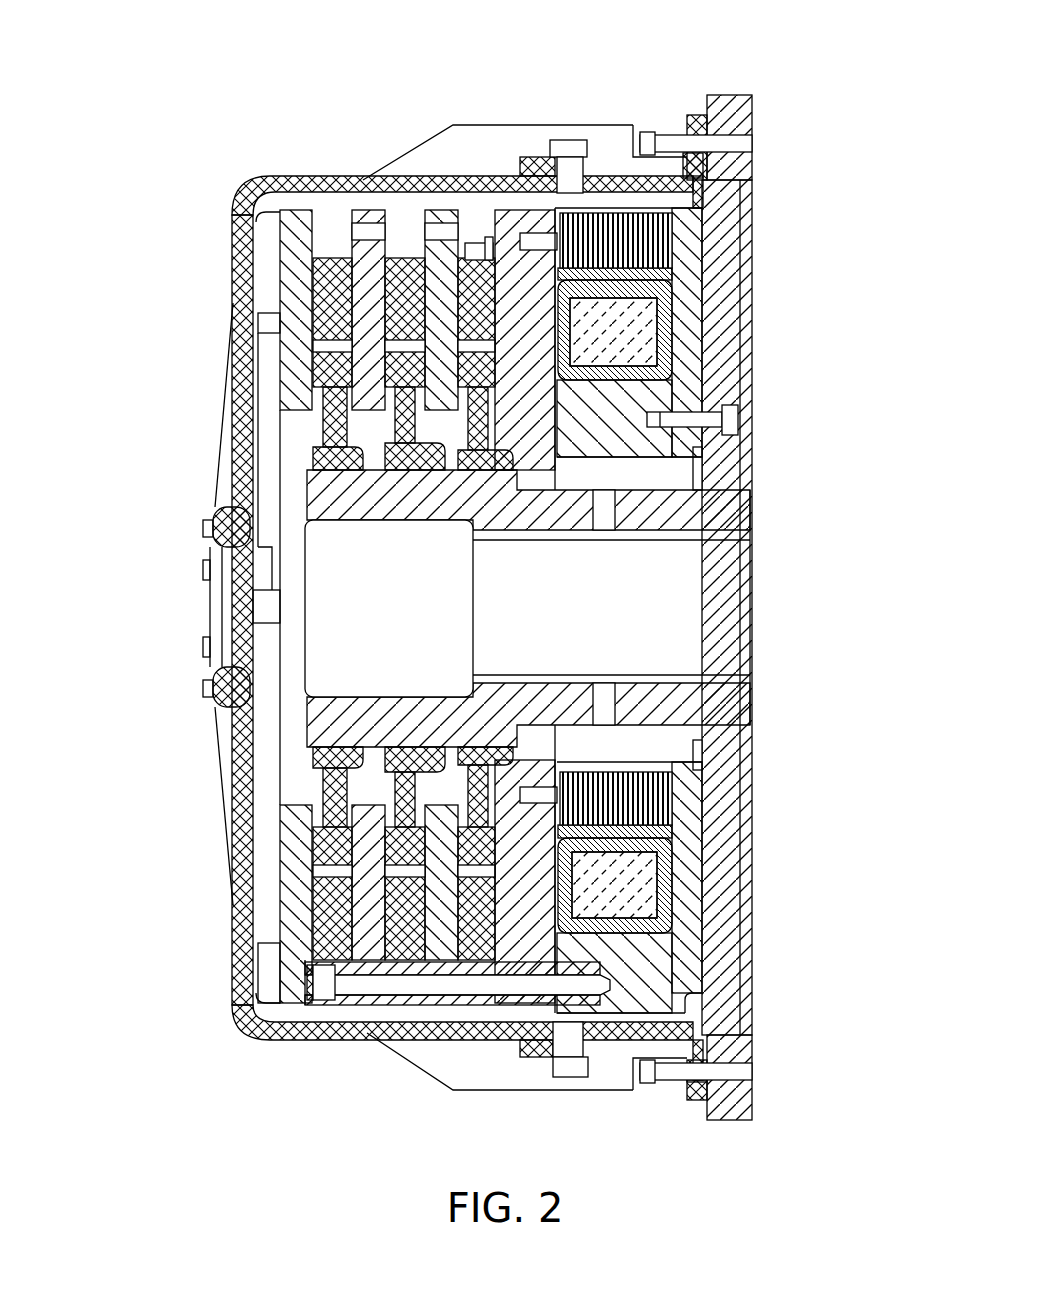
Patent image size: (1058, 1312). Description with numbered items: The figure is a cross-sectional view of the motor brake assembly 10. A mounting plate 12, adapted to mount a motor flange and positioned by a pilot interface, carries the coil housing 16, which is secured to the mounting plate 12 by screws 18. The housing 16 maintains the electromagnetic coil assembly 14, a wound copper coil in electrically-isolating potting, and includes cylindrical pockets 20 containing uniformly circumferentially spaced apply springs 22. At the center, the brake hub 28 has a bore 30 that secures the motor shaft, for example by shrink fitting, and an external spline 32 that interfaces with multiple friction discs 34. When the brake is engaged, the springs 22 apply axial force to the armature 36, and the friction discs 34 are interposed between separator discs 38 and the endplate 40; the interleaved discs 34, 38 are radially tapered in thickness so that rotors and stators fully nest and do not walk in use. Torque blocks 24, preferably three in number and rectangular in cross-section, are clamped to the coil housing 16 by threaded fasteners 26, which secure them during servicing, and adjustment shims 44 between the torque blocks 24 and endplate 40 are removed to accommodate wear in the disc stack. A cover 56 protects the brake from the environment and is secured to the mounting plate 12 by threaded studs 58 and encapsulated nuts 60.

The motor brake assembly 10 is at (467, 581).
The mounting plate 12 is at (753, 110).
The electromagnetic coil assembly 14 is at (672, 310).
The coil housing 16 is at (682, 948).
The screws 18 is at (740, 413).
The cylindrical pockets 20 is at (690, 256).
The apply springs 22 is at (700, 222).
The torque blocks 24 is at (372, 1000).
The threaded fasteners 26 is at (312, 1003).
The brake hub 28 is at (752, 514).
The bore 30 is at (768, 578).
The external spline 32 is at (310, 468).
The friction discs 34 is at (312, 924).
The armature 36 is at (513, 208).
The separator discs 38 is at (378, 212).
The endplate 40 is at (308, 207).
The adjustment shims 44 is at (327, 998).
The cover 56 is at (273, 178).
The threaded studs 58 is at (660, 124).
The encapsulated nuts 60 is at (575, 140).